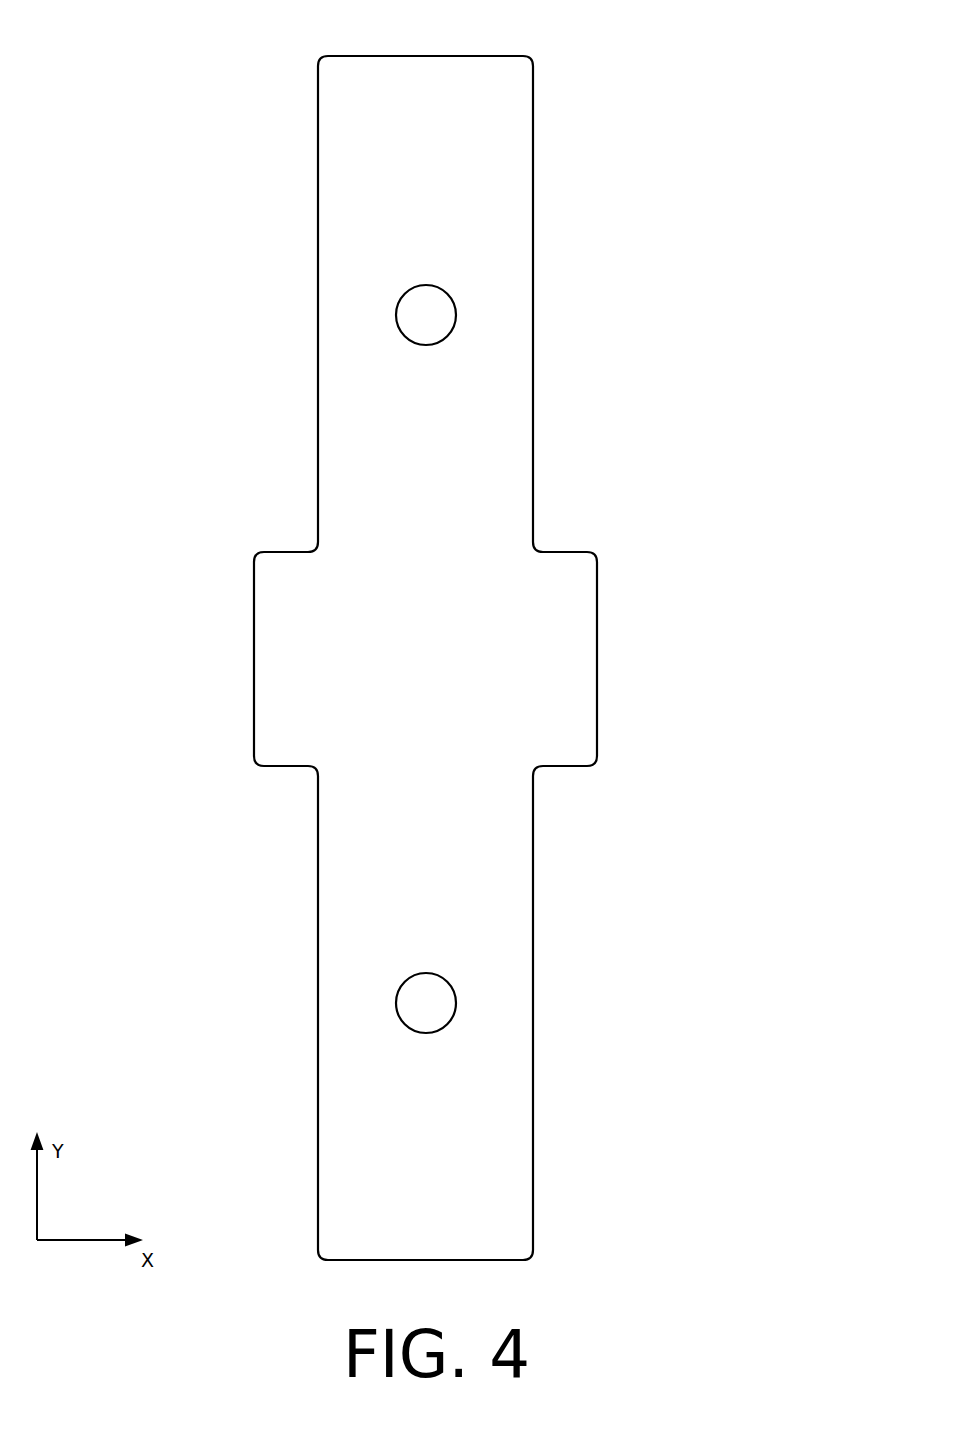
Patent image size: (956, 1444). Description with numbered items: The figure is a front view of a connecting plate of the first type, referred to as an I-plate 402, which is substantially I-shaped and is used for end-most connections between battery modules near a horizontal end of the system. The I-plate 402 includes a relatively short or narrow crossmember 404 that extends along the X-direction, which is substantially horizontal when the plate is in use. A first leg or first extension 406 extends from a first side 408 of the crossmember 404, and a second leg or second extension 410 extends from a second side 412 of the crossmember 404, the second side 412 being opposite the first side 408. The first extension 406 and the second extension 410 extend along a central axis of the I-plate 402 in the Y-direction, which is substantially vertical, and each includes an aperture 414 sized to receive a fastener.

The I-plate 402 is at (444, 632).
The crossmember 404 is at (254, 660).
The first extension 406 is at (533, 216).
The first side 408 is at (280, 532).
The second extension 410 is at (533, 1066).
The second side 412 is at (274, 784).
The aperture 414 is at (435, 973).